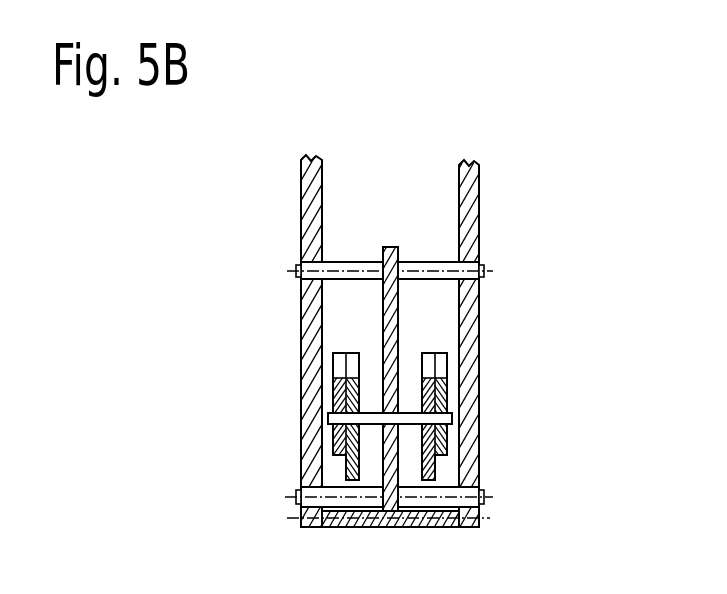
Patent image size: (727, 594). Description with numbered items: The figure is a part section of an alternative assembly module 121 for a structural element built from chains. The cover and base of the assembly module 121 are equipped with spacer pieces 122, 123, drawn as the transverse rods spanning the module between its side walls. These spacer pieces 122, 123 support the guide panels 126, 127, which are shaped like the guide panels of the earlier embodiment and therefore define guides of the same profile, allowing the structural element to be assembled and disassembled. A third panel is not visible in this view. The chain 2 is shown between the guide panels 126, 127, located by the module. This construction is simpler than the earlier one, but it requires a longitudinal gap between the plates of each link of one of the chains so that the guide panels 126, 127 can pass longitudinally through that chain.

The assembly module 121 is at (565, 216).
The spacer piece 122 is at (440, 497).
The spacer piece 123 is at (428, 266).
The guide panel 126 is at (383, 252).
The guide panel 127 is at (389, 477).
The chain 2 is at (348, 348).